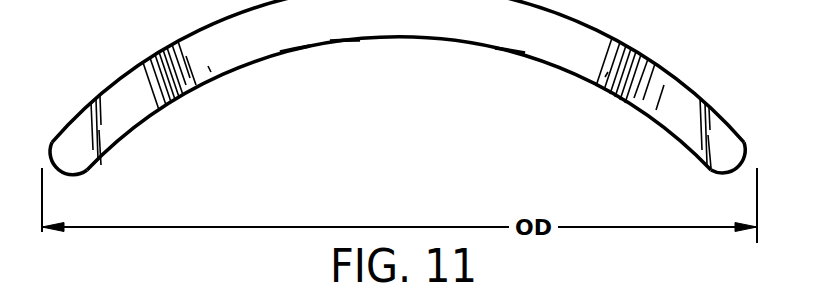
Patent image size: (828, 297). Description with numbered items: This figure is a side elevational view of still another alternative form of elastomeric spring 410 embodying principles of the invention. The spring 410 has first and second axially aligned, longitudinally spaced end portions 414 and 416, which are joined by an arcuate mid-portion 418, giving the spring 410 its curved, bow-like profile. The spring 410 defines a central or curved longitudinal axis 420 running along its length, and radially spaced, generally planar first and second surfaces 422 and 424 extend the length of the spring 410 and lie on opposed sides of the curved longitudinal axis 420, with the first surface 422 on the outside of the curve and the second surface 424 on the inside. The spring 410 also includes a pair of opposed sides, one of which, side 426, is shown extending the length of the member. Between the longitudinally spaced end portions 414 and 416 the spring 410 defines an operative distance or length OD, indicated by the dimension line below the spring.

The elastomeric spring 410 is at (187, 29).
The first end portion 414 is at (88, 160).
The second end portion 416 is at (708, 160).
The arcuate mid-portion 418 is at (380, 30).
The curved longitudinal axis 420 is at (339, 17).
The first surface 422 is at (592, 30).
The second surface 424 is at (295, 49).
The side 426 is at (509, 43).